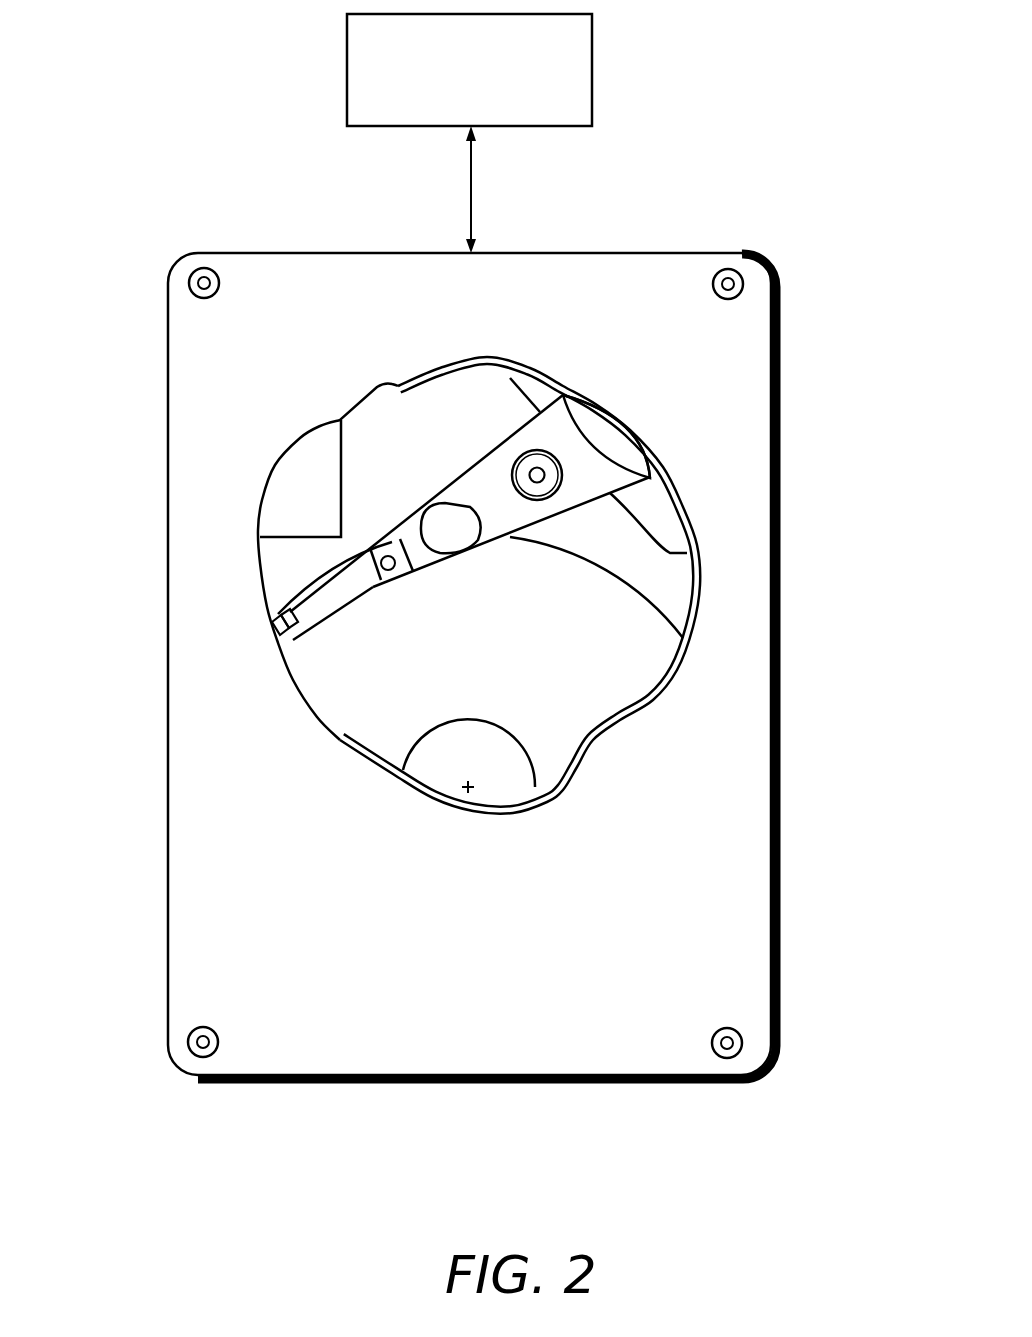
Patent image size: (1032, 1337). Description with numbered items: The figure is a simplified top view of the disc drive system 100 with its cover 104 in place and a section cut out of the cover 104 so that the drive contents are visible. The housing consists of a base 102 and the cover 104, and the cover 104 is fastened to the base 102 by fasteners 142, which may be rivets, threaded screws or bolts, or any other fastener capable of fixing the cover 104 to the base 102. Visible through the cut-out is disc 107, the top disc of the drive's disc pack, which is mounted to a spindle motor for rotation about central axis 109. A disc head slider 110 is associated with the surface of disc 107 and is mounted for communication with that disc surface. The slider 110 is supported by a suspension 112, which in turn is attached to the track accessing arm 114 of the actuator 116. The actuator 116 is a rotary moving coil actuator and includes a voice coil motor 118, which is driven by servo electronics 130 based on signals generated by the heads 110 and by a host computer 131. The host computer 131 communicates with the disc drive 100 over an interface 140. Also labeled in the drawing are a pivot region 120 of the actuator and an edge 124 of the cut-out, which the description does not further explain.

The disc drive system 100 is at (100, 117).
The base 102 is at (790, 501).
The cover 104 is at (212, 835).
The disc 107 is at (598, 691).
The central axis 109 is at (473, 790).
The disc head slider 110 is at (306, 647).
The suspension 112 is at (327, 598).
The track accessing arm 114 is at (393, 548).
The actuator 116 is at (572, 435).
The voice coil motor 118 is at (648, 506).
The pivot bearing 120 is at (530, 475).
The cover opening edge 124 is at (563, 795).
The servo electronics 130 is at (315, 487).
The host computer 131 is at (593, 67).
The interface 140 is at (487, 190).
The fasteners 142 is at (190, 1055).